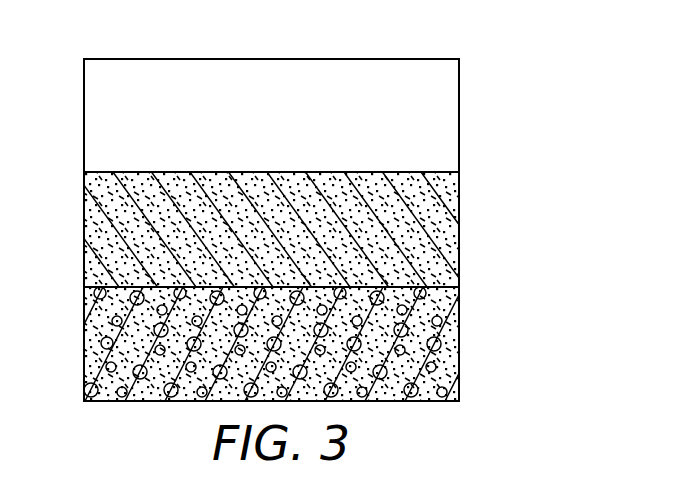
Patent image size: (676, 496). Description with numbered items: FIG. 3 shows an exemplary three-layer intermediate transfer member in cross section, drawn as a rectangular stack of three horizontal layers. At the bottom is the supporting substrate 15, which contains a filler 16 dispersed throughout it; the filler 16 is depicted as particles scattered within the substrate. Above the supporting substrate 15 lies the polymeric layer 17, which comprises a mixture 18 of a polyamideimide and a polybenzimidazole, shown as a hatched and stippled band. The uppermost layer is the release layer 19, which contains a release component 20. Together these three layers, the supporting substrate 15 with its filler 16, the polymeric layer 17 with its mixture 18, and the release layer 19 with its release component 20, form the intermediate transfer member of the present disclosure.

The supporting substrate 15 is at (459, 338).
The filler 16 is at (101, 343).
The polymeric layer 17 is at (459, 227).
The mixture 18 is at (420, 198).
The release layer 19 is at (459, 113).
The release component 20 is at (267, 80).